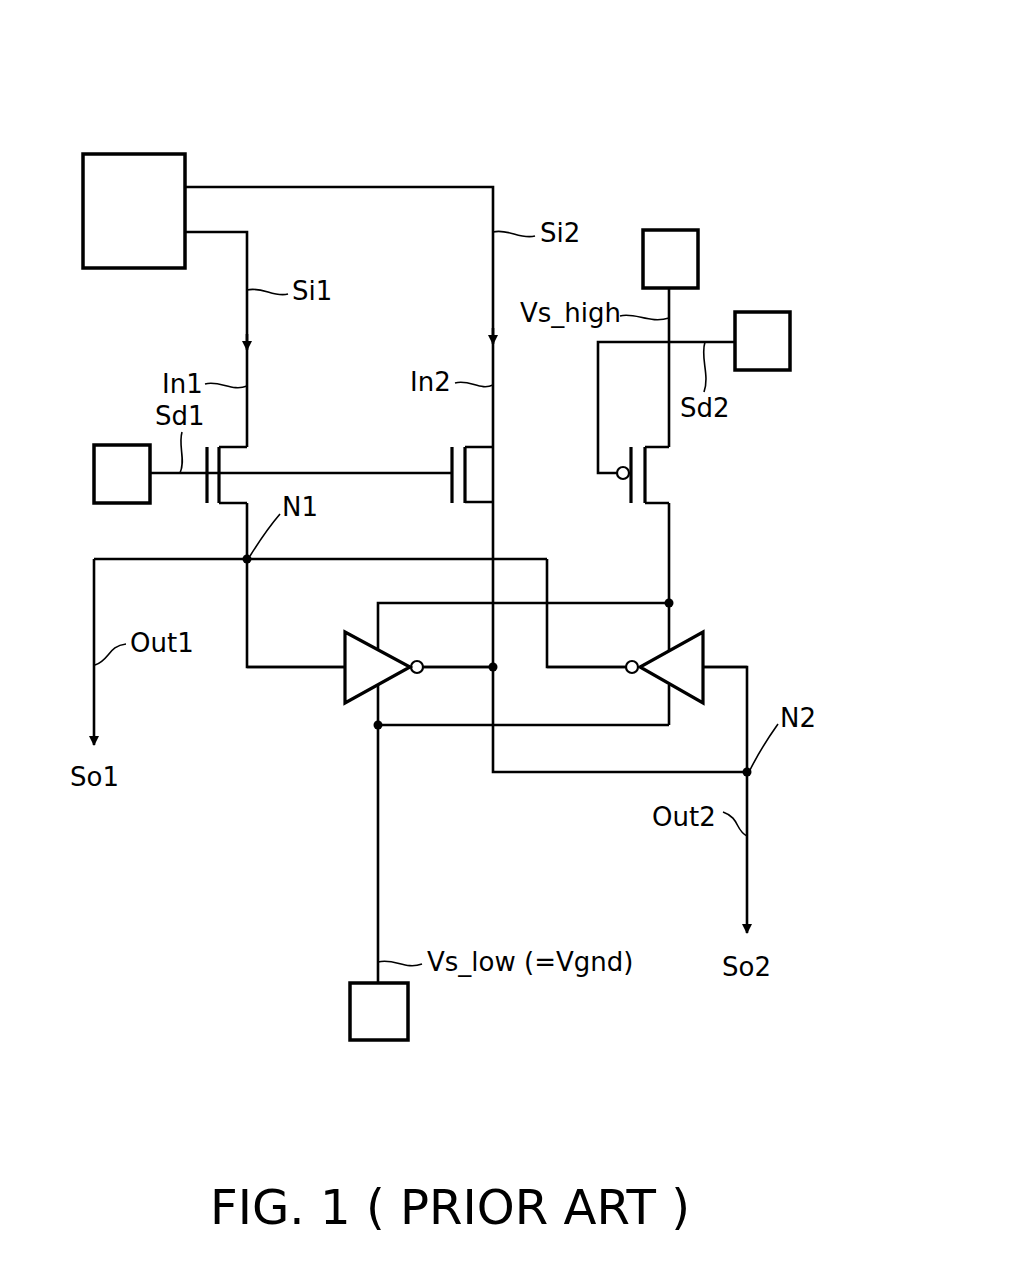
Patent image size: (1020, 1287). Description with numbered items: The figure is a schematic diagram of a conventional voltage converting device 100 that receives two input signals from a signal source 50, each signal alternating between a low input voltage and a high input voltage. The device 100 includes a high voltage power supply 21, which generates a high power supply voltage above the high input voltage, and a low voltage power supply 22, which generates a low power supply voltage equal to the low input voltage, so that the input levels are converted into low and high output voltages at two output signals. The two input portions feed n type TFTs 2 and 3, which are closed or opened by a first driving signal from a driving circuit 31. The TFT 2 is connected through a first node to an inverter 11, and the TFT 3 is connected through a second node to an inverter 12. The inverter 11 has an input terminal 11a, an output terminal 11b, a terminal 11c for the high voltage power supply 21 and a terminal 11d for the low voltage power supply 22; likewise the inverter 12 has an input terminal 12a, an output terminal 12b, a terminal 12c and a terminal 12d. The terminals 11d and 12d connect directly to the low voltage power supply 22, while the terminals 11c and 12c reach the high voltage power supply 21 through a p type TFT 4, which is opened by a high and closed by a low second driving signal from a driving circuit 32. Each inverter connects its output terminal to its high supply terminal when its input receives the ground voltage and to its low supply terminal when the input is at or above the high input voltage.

The voltage converting device 100 is at (773, 76).
The signal source 50 is at (132, 154).
The high voltage power supply 21 is at (669, 230).
The low voltage power supply 22 is at (378, 1040).
The driving circuit 31 is at (122, 445).
The driving circuit 32 is at (762, 312).
The TFT 2 is at (240, 462).
The TFT 3 is at (487, 463).
The TFT 4 is at (663, 474).
The inverter 11 is at (336, 627).
The input terminal 11a is at (282, 664).
The output terminal 11b is at (455, 672).
The terminal for the high voltage power supply 11c is at (378, 625).
The terminal for the low voltage power supply 11d is at (378, 705).
The inverter 12 is at (705, 652).
The input terminal 12a is at (725, 670).
The output terminal 12b is at (585, 664).
The terminal for the high voltage power supply 12c is at (669, 625).
The terminal for the low voltage power supply 12d is at (668, 706).